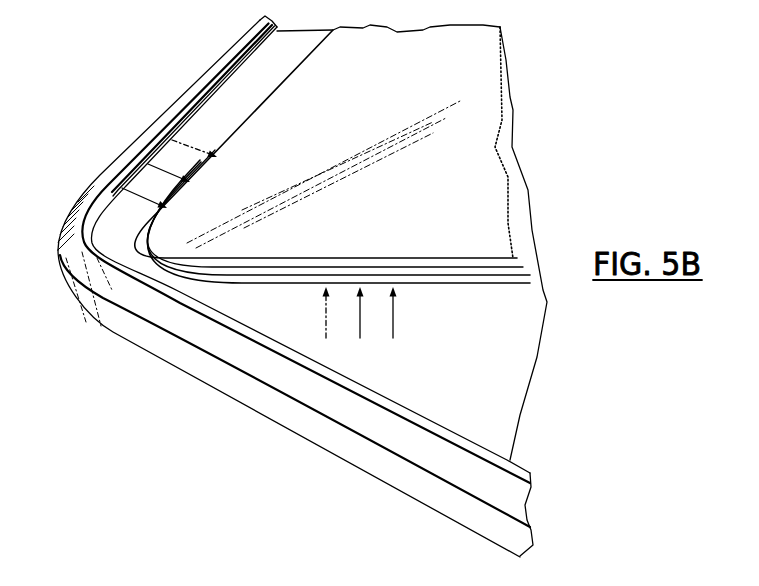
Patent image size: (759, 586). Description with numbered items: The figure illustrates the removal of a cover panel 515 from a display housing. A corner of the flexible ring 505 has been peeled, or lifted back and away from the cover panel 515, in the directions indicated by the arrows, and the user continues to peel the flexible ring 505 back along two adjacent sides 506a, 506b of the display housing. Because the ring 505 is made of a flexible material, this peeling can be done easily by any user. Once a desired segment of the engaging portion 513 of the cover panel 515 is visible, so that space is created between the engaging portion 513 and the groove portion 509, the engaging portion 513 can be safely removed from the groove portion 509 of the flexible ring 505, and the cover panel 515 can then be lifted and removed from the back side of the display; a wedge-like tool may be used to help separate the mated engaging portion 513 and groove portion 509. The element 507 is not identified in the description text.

The flexible ring 505 is at (181, 346).
The side of the display housing 506a is at (118, 328).
The side of the display housing 506b is at (109, 153).
The display module 507 is at (500, 337).
The groove portion 509 is at (102, 206).
The engaging portion 513 is at (187, 262).
The cover panel 515 is at (473, 40).